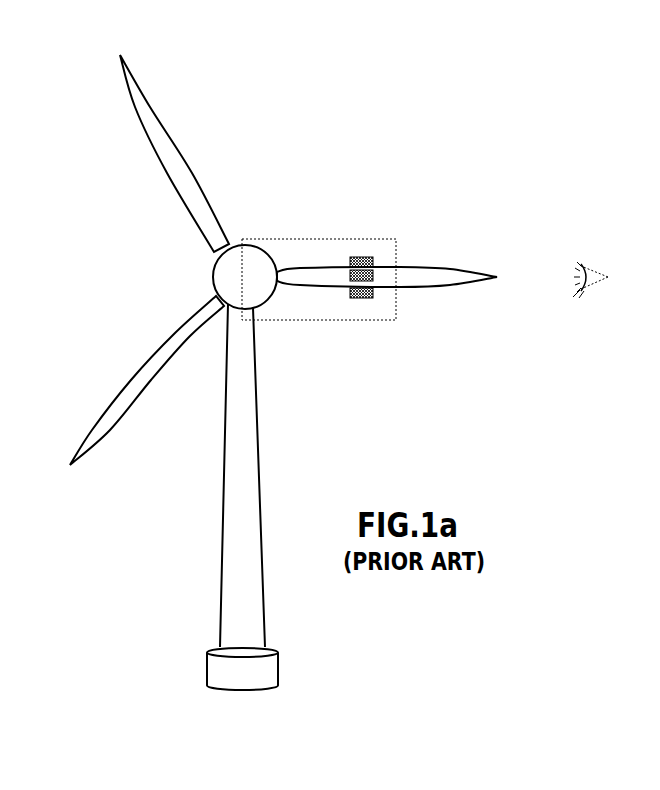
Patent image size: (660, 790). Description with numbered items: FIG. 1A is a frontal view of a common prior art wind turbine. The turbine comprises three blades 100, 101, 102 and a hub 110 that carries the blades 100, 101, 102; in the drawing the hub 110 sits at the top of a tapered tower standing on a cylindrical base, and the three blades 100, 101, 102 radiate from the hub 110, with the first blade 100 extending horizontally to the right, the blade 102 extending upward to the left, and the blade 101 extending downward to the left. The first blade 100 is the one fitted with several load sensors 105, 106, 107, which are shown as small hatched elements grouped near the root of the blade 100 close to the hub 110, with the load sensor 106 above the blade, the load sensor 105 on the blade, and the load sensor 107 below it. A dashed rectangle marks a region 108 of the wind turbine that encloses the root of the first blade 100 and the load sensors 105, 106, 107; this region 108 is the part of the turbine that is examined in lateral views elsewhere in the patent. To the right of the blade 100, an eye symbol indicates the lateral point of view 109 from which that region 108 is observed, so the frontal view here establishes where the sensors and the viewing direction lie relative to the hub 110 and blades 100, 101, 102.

The blade 100 is at (455, 263).
The blade 101 is at (137, 397).
The blade 102 is at (170, 137).
The load sensor 105 is at (374, 279).
The load sensor 106 is at (362, 262).
The load sensor 107 is at (362, 296).
The region 108 is at (298, 239).
The lateral point of view 109 is at (598, 267).
The hub 110 is at (229, 278).